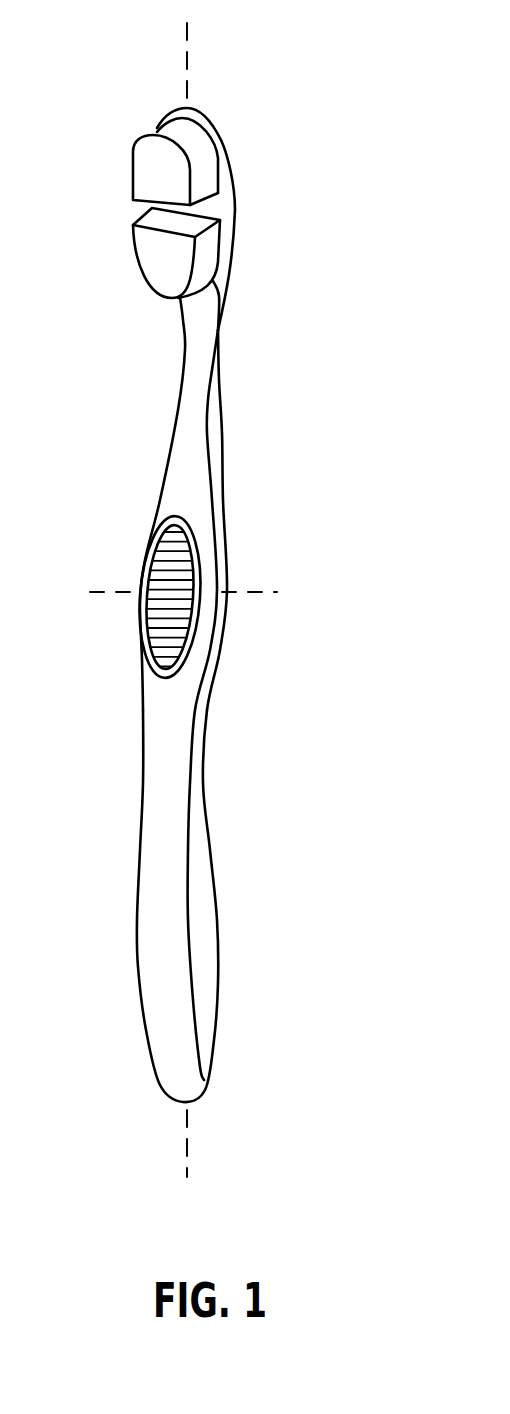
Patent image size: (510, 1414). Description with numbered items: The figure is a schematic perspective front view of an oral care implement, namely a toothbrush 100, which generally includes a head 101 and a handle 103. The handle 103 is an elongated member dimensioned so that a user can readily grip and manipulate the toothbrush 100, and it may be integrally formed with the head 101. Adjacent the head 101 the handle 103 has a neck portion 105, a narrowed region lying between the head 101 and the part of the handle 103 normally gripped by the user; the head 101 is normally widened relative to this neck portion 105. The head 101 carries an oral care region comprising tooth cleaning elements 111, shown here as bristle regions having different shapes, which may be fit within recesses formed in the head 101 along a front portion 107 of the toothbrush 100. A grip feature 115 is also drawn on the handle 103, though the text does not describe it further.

The toothbrush 100 is at (210, 602).
The head 101 is at (227, 197).
The handle 103 is at (207, 867).
The neck portion 105 is at (215, 440).
The front portion 107 is at (189, 106).
The tooth cleaning elements 111 is at (152, 269).
The grip element 115 is at (157, 558).